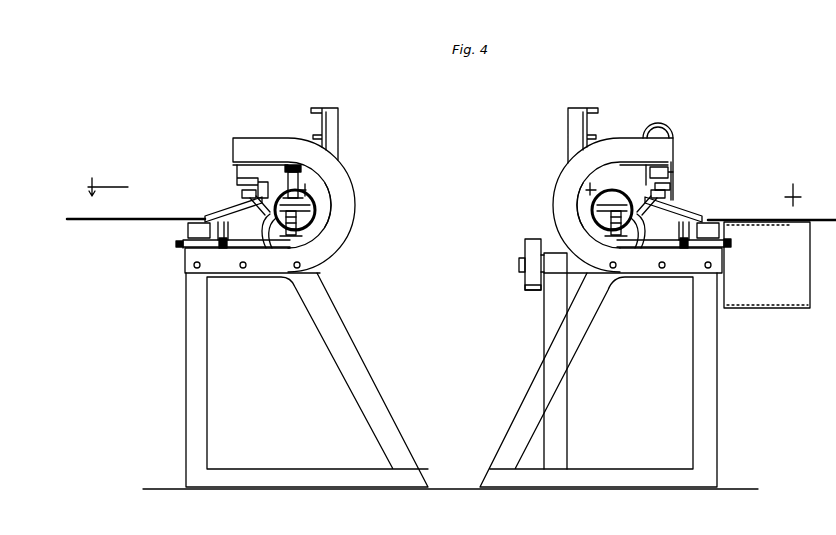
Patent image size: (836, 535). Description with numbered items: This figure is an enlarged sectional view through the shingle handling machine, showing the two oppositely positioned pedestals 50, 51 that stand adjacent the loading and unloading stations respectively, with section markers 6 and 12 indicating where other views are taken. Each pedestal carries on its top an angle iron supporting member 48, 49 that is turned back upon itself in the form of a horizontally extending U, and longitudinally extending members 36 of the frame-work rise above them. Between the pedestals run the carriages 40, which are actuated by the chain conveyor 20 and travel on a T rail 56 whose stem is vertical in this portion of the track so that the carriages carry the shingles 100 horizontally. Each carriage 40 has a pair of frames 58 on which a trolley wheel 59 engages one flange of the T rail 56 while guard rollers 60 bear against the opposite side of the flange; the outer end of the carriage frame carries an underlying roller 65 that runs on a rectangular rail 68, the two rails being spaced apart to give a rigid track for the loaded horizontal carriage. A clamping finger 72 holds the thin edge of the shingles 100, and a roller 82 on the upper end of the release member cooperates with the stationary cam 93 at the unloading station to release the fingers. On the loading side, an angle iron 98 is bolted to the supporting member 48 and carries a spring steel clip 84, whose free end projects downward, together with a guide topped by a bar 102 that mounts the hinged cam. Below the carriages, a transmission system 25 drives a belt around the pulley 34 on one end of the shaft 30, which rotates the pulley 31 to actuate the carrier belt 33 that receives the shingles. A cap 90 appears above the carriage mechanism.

The section line marker 6 is at (699, 190).
The section line marker 12 is at (96, 187).
The chain conveyor 20 is at (287, 180).
The transmission system 25 is at (527, 292).
The shaft 30 is at (576, 273).
The pulley 31 is at (798, 290).
The carrier belt 33 is at (789, 308).
The pulley 34 is at (530, 239).
The longitudinally extending members 36 is at (313, 109).
The carriage 40 is at (636, 248).
The angle iron supporting member 48 is at (567, 172).
The angle iron supporting member 49 is at (343, 181).
The pedestal 50 is at (593, 318).
The pedestal 51 is at (213, 344).
The T rail 56 is at (298, 238).
The frame 58 is at (316, 210).
The trolley wheel 59 is at (318, 221).
The guard rollers 60 is at (264, 248).
The underlying roller 65 is at (227, 229).
The rectangular rail 68 is at (222, 248).
The finger 72 is at (206, 219).
The roller 82 is at (241, 194).
The spring steel clip 84 is at (675, 148).
The cap 90 is at (292, 165).
The stationary cam 93 is at (238, 180).
The angle iron 98 is at (673, 172).
The shingles 100 is at (103, 219).
The bar 102 is at (670, 187).